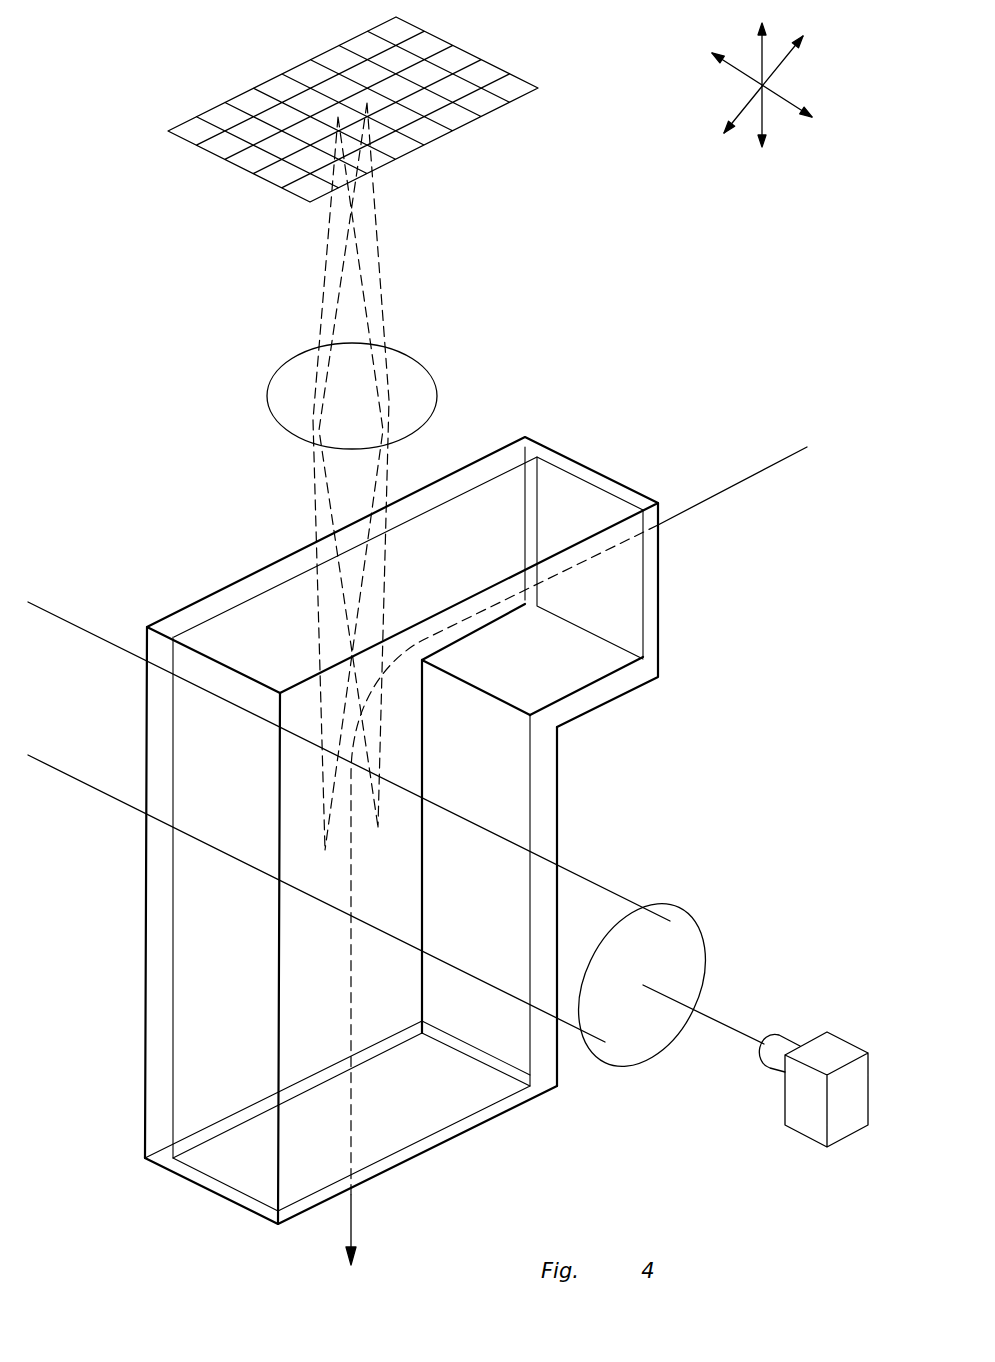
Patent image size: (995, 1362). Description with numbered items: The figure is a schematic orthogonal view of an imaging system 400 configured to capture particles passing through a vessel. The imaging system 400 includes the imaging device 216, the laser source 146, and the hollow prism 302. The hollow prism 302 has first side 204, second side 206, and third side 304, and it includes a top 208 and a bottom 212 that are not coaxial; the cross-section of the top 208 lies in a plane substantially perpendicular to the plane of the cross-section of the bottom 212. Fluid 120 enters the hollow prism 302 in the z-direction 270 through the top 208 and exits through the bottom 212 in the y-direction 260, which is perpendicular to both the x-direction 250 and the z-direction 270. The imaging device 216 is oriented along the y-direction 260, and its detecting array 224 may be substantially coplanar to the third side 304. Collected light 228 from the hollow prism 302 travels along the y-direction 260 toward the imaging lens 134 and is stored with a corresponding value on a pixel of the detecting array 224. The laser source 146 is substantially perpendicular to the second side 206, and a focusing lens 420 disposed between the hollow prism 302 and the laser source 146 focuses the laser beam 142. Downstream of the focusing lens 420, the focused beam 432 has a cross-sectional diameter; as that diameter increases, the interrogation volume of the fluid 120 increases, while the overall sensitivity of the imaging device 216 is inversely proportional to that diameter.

The fluid 120 is at (737, 483).
The imaging lens 134 is at (267, 397).
The laser beam 142 is at (733, 1030).
The laser source 146 is at (805, 1138).
The first side 204 is at (192, 732).
The second side 206 is at (510, 787).
The top 208 is at (613, 587).
The bottom 212 is at (417, 1107).
The imaging device 216 is at (303, 280).
The detecting array 224 is at (238, 93).
The collected light 228 is at (317, 518).
The x-direction 250 is at (783, 100).
The y-direction 260 is at (762, 73).
The z-direction 270 is at (780, 72).
The hollow prism 302 is at (233, 563).
The third side 304 is at (502, 490).
The imaging system 400 is at (132, 480).
The focusing lens 420 is at (676, 905).
The focused beam 432 is at (592, 883).